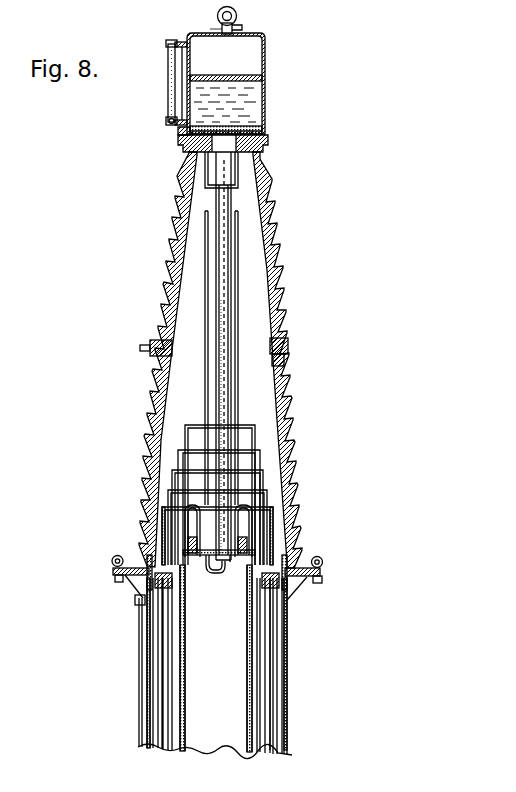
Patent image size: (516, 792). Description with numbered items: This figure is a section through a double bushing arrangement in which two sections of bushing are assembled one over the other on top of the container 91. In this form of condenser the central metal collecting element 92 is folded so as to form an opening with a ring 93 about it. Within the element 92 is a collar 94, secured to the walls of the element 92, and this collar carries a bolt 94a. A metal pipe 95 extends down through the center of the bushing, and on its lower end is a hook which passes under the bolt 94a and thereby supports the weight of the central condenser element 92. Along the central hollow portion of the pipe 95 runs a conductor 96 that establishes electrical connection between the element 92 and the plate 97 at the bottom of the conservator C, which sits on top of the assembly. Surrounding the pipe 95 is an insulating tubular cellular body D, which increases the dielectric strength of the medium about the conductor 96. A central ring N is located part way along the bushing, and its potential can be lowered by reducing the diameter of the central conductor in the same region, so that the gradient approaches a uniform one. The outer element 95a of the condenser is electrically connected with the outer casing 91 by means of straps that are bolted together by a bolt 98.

The conservator C is at (265, 58).
The plate 97 is at (262, 127).
The metal pipe 95 is at (230, 204).
The insulating tubular cellular body D is at (238, 222).
The conductor 96 is at (230, 270).
The central ring N is at (305, 350).
The ring 93 is at (247, 508).
The central metal collecting element 92 is at (252, 527).
The collar 94 is at (247, 545).
The bolt 94a is at (232, 556).
The bolt 98 is at (163, 557).
The container 91 is at (287, 660).
The outer element 95a is at (270, 697).